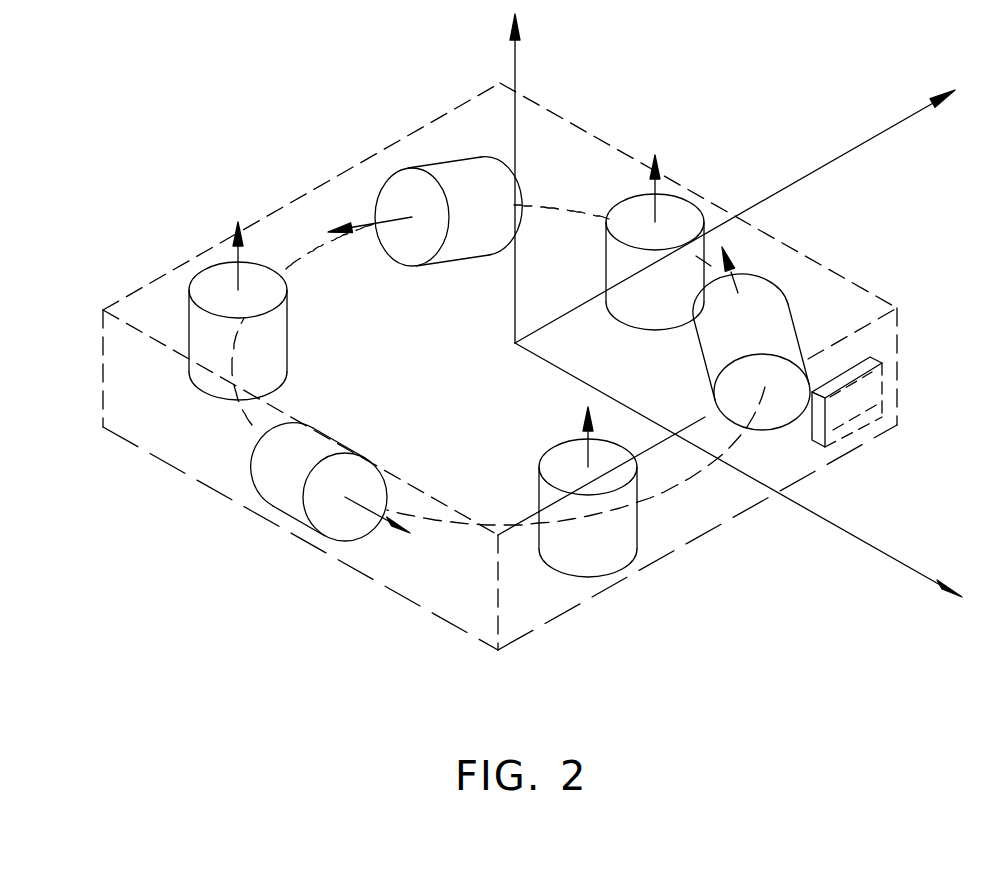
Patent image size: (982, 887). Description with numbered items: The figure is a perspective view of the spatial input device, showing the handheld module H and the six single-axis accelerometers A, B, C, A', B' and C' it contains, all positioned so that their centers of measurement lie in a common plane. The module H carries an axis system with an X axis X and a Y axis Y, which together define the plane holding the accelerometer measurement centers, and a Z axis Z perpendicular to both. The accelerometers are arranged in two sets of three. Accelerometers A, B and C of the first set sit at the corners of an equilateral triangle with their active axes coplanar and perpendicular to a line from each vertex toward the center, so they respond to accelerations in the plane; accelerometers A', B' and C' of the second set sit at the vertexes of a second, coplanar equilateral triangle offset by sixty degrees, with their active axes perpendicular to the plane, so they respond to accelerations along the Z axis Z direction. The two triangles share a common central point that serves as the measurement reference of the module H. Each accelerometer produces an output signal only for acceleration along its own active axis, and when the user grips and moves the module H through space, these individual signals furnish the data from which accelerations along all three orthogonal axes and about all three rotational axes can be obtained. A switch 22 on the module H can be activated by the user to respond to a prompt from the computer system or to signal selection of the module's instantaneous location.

The accelerometer A is at (281, 493).
The accelerometer A' is at (673, 239).
The accelerometer B is at (775, 335).
The accelerometer B' is at (207, 311).
The accelerometer C is at (425, 187).
The accelerometer C' is at (607, 515).
The handheld module H is at (720, 530).
The switch 22 is at (887, 383).
The X axis X is at (738, 470).
The Y axis Y is at (744, 216).
The Z axis Z is at (490, 178).